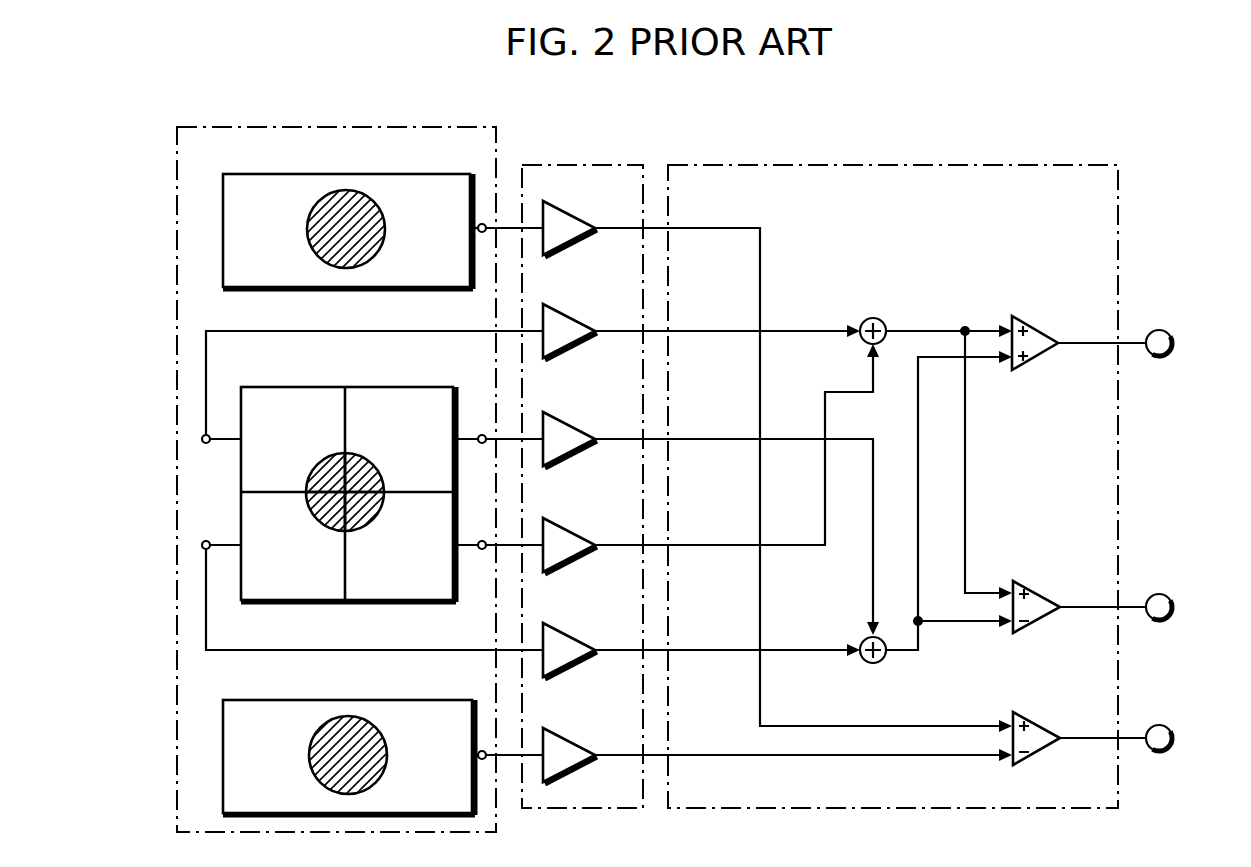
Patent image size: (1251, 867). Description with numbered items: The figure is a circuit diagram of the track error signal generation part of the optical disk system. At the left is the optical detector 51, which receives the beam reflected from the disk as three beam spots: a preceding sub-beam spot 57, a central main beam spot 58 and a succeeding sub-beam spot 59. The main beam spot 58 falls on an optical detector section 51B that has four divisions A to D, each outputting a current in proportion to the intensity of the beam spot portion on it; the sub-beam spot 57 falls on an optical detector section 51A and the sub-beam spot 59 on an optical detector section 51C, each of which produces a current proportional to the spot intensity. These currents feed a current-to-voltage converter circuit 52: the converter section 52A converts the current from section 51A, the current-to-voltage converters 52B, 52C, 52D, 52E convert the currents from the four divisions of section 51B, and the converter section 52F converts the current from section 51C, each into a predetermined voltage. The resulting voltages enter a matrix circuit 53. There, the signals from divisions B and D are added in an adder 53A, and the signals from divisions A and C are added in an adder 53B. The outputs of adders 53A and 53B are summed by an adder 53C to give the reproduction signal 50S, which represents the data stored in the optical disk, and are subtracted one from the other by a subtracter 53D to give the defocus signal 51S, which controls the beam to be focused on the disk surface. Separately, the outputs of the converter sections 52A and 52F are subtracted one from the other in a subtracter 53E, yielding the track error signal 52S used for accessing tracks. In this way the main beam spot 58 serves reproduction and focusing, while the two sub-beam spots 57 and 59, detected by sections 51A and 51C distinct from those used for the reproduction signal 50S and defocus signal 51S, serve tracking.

The optical detector 51 is at (273, 127).
The optical detector section 51A is at (354, 230).
The optical detector section 51B is at (344, 491).
The optical detector section 51C is at (354, 767).
The sub-beam spot 57 is at (367, 262).
The main beam spot 58 is at (360, 530).
The sub-beam spot 59 is at (364, 792).
The current-to-voltage converter circuit 52 is at (558, 165).
The current-to-voltage converter section 52A is at (560, 212).
The current-to-voltage converter 52B is at (560, 315).
The current-to-voltage converter 52C is at (560, 422).
The current-to-voltage converter 52D is at (560, 528).
The current-to-voltage converter 52E is at (560, 634).
The current-to-voltage converter section 52F is at (560, 738).
The matrix circuit 53 is at (912, 165).
The adder 53A is at (874, 318).
The adder 53B is at (862, 639).
The adder 53C is at (1040, 325).
The subtracter 53D is at (1043, 624).
The subtracter 53E is at (1040, 722).
The reproduction signal 50S is at (1160, 330).
The defocus signal 51S is at (1160, 594).
The track error signal 52S is at (1160, 725).